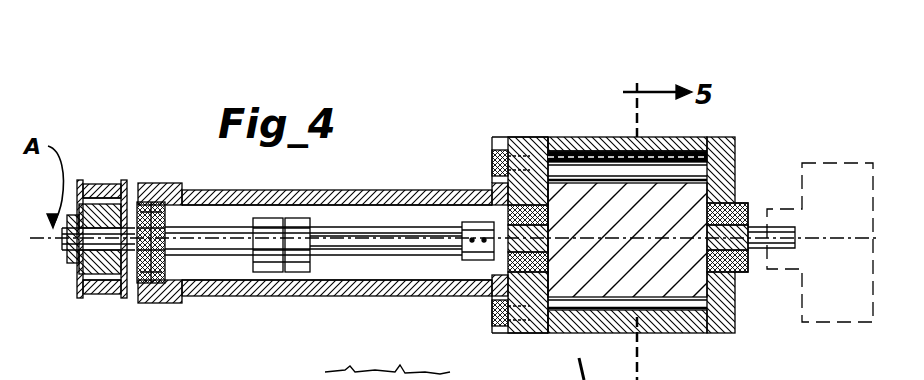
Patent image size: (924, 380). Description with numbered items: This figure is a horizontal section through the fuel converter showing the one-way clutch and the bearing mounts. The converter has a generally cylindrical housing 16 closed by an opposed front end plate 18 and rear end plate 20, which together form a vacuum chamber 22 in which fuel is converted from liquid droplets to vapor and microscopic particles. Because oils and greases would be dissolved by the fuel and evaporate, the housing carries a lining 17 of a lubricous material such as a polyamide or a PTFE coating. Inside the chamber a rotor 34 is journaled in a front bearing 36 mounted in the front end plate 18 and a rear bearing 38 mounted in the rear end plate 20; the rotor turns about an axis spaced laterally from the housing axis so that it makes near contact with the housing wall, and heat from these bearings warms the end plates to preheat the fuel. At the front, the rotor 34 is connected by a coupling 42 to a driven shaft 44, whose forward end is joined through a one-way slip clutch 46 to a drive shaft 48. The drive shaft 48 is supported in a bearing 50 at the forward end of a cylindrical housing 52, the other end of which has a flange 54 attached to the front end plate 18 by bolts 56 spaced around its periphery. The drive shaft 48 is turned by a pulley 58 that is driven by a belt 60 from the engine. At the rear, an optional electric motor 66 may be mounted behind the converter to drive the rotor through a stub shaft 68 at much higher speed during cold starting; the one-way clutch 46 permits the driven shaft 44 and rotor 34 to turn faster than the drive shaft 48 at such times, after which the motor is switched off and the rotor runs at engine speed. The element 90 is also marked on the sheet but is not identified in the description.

The housing 16 is at (650, 138).
The lining 17 is at (607, 137).
The front end plate 18 is at (528, 137).
The rear end plate 20 is at (737, 137).
The vacuum chamber 22 is at (693, 140).
The rotor 34 is at (578, 205).
The front bearing 36 is at (452, 297).
The rear bearing 38 is at (740, 274).
The coupling 42 is at (470, 222).
The driven shaft 44 is at (365, 258).
The one-way slip clutch 46 is at (270, 272).
The drive shaft 48 is at (238, 240).
The bearing 50 is at (158, 285).
The cylindrical housing 52 is at (384, 190).
The flange 54 is at (496, 160).
The bolts 56 is at (492, 162).
The pulley 58 is at (76, 266).
The belt 60 is at (101, 181).
The electric motor 66 is at (848, 160).
The stub shaft 68 is at (766, 236).
The element 90 is at (513, 371).